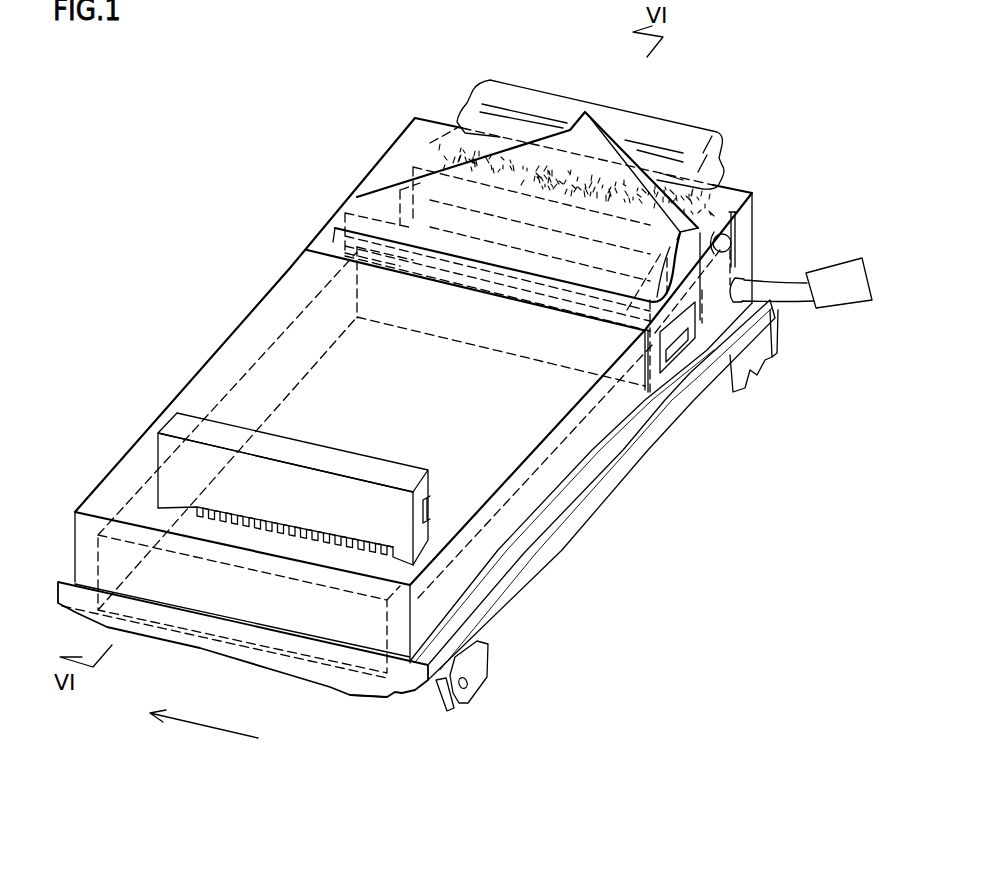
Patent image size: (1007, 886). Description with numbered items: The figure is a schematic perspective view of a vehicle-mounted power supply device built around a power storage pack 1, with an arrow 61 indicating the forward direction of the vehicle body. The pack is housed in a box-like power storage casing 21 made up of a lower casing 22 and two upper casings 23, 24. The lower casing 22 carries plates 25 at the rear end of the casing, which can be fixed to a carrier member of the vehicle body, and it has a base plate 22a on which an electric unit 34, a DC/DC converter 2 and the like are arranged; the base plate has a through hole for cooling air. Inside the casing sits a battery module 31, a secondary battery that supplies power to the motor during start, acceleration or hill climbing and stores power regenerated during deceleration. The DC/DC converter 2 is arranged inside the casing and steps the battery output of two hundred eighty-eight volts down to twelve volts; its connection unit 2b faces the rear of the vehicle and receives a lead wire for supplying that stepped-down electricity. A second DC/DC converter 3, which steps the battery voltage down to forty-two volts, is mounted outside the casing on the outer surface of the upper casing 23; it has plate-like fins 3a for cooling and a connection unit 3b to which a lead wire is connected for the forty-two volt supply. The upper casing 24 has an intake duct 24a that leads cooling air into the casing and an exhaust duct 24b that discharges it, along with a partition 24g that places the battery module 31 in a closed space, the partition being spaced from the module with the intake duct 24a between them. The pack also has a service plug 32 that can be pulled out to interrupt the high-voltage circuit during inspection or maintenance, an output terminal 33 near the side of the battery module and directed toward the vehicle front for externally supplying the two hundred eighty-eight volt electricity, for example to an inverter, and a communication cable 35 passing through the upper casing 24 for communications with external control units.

The power storage pack 1 is at (260, 138).
The DC/DC converter 2 is at (427, 148).
The connection unit 2b is at (733, 242).
The DC/DC converter 3 is at (278, 495).
The fins 3a is at (318, 545).
The connection unit 3b is at (430, 512).
The power storage casing 21 is at (157, 306).
The lower casing 22 is at (58, 584).
The base plate 22a is at (408, 685).
The upper casing 23 is at (140, 428).
The upper casing 24 is at (302, 242).
The intake duct 24a is at (543, 137).
The exhaust duct 24b is at (683, 133).
The partition 24g is at (332, 240).
The plates 25 is at (770, 362).
The battery module 31 is at (603, 440).
The service plug 32 is at (667, 360).
The output terminal 33 is at (370, 230).
The electric unit 34 is at (413, 202).
The communication cable 35 is at (837, 283).
The arrow 61 is at (205, 730).